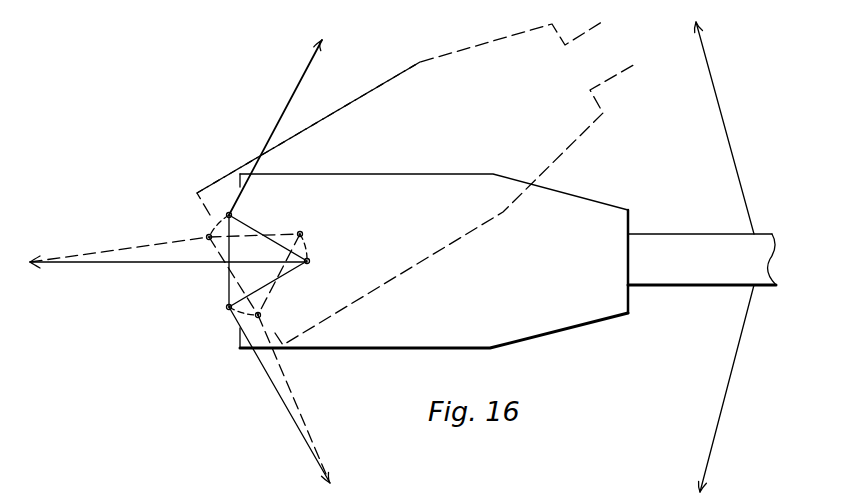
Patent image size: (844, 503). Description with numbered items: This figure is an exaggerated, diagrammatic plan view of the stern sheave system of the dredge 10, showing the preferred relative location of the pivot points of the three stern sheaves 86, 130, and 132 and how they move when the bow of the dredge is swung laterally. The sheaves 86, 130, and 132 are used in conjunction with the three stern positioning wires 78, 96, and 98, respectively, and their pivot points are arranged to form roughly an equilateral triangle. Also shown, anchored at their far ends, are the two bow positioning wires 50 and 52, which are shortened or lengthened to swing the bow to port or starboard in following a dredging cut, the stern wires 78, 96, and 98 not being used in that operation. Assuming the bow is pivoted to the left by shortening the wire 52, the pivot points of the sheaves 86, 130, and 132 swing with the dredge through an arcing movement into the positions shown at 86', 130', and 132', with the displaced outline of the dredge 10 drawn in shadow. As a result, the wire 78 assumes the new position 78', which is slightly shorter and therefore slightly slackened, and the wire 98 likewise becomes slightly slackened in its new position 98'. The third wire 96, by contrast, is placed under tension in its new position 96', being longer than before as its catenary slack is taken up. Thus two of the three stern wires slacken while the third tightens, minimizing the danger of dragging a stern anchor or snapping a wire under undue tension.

The dredge 10 is at (553, 333).
The bow positioning wire 50 is at (733, 370).
The bow positioning wire 52 is at (716, 100).
The stern positioning wire 78 is at (168, 277).
The new position of wire 78 78' is at (119, 244).
The stern sheave 86 is at (288, 278).
The new position of sheave 86 pivot point 86' is at (295, 259).
The stern positioning wire 96 is at (275, 127).
The new position of wire 96 96' is at (308, 127).
The stern positioning wire 98 is at (279, 395).
The new position of wire 98 98' is at (297, 394).
The stern sheave 130 is at (267, 253).
The new position of sheave 130 pivot point 130' is at (236, 265).
The stern sheave 132 is at (219, 326).
The new position of sheave 132 pivot point 132' is at (287, 322).